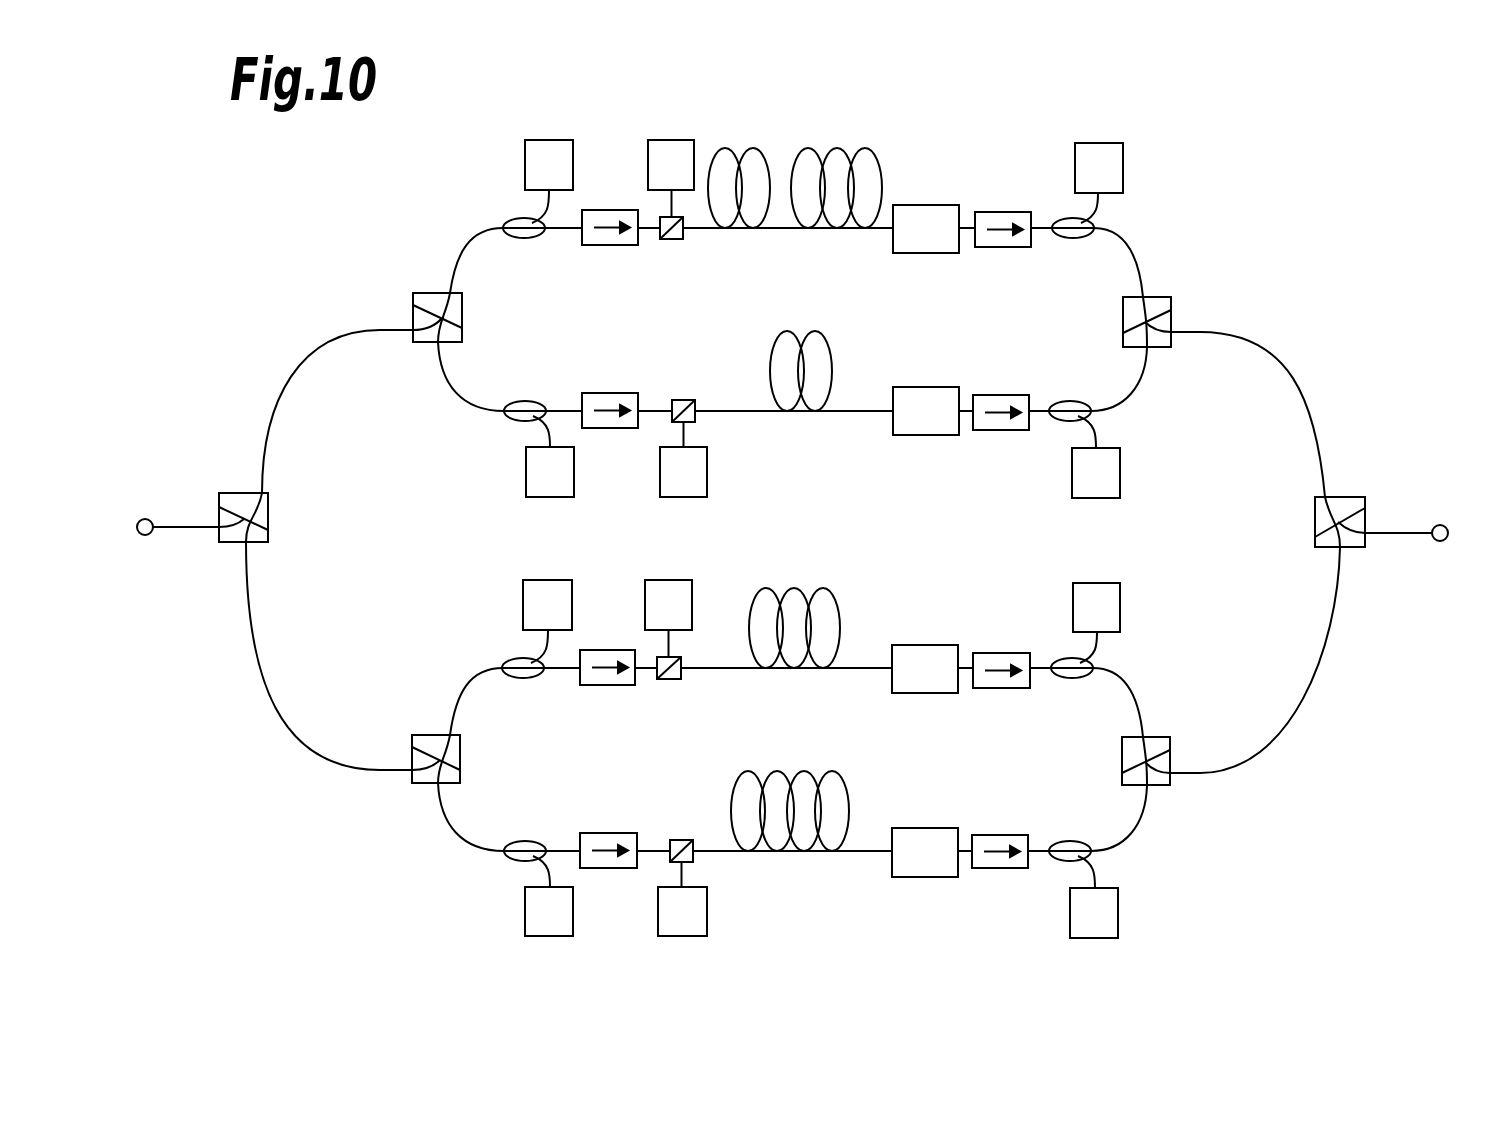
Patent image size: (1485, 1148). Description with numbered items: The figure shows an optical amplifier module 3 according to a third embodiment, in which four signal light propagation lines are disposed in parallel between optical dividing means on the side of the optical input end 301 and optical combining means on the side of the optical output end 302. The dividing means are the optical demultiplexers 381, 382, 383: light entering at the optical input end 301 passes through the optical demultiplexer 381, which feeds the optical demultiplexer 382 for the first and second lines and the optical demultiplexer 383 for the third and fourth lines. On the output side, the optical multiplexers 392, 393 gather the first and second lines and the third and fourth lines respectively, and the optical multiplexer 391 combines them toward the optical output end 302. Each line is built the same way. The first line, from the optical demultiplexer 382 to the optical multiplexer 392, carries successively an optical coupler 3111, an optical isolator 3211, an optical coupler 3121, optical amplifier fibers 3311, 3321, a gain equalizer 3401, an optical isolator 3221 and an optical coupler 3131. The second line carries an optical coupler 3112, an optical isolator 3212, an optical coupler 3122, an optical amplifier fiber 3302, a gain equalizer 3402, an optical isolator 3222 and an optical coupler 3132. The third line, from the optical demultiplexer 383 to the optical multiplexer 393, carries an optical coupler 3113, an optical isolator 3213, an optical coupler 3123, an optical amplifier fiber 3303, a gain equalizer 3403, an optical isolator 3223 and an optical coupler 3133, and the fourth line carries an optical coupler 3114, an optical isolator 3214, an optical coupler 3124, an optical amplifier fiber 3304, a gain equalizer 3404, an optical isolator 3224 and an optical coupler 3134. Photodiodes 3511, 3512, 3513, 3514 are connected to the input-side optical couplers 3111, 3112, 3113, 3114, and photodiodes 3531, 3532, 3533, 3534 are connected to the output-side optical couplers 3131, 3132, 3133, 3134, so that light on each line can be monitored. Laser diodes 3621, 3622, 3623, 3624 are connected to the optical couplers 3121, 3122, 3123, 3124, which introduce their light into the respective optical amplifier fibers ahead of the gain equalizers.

The optical amplifier module 3 is at (1266, 186).
The optical input end 301 is at (145, 518).
The optical output end 302 is at (1440, 524).
The optical demultiplexer 381 is at (228, 493).
The optical demultiplexer 382 is at (424, 293).
The optical demultiplexer 383 is at (422, 735).
The optical multiplexer 391 is at (1358, 497).
The optical multiplexer 392 is at (1168, 297).
The optical multiplexer 393 is at (1166, 737).
The optical coupler 3111 is at (522, 238).
The optical coupler 3112 is at (525, 401).
The optical coupler 3113 is at (522, 678).
The optical coupler 3114 is at (525, 841).
The optical coupler 3131 is at (1078, 238).
The optical coupler 3132 is at (1071, 401).
The optical coupler 3133 is at (1078, 678).
The optical coupler 3134 is at (1070, 841).
The optical coupler 3121 is at (675, 239).
The optical coupler 3122 is at (683, 400).
The optical coupler 3123 is at (672, 679).
The optical coupler 3124 is at (682, 840).
The optical isolator 3211 is at (607, 245).
The optical isolator 3212 is at (609, 393).
The optical isolator 3213 is at (607, 685).
The optical isolator 3214 is at (608, 833).
The optical isolator 3221 is at (1006, 247).
The optical isolator 3222 is at (1001, 395).
The optical isolator 3223 is at (1003, 688).
The optical isolator 3224 is at (1000, 835).
The optical amplifier fiber 3311 is at (752, 148).
The optical amplifier fiber 3321 is at (838, 148).
The optical amplifier fiber 3302 is at (793, 331).
The optical amplifier fiber 3303 is at (794, 588).
The optical amplifier fiber 3304 is at (778, 771).
The gain equalizer 3401 is at (927, 253).
The gain equalizer 3402 is at (926, 387).
The gain equalizer 3403 is at (925, 693).
The gain equalizer 3404 is at (925, 828).
The photodiode 3511 is at (548, 140).
The photodiode 3512 is at (526, 478).
The photodiode 3513 is at (548, 580).
The photodiode 3514 is at (525, 918).
The photodiode 3531 is at (1098, 143).
The photodiode 3532 is at (1072, 480).
The photodiode 3533 is at (1097, 583).
The photodiode 3534 is at (1070, 920).
The laser diode 3621 is at (672, 140).
The laser diode 3622 is at (660, 478).
The laser diode 3623 is at (670, 580).
The laser diode 3624 is at (658, 918).